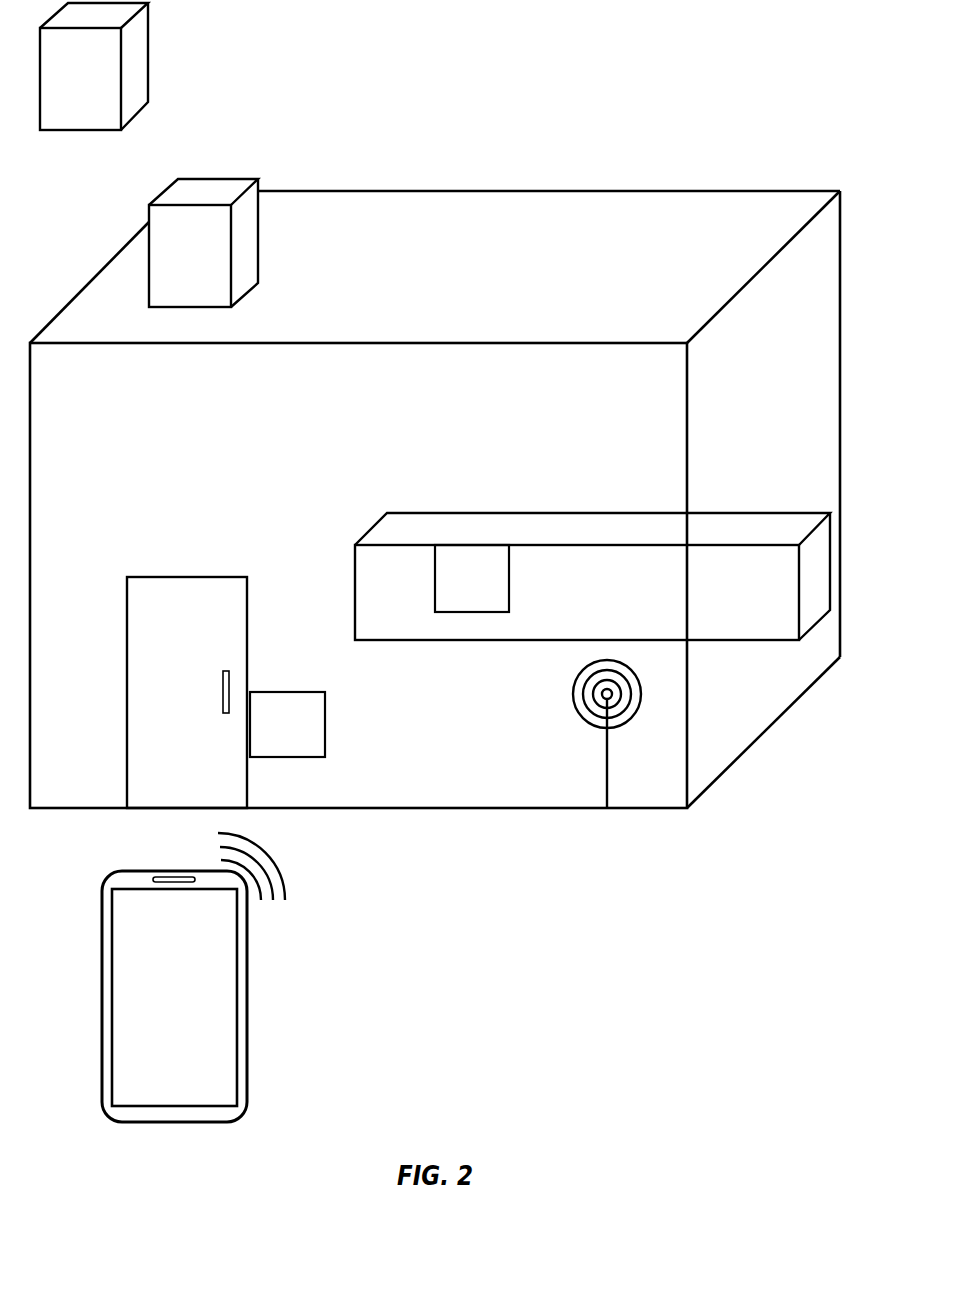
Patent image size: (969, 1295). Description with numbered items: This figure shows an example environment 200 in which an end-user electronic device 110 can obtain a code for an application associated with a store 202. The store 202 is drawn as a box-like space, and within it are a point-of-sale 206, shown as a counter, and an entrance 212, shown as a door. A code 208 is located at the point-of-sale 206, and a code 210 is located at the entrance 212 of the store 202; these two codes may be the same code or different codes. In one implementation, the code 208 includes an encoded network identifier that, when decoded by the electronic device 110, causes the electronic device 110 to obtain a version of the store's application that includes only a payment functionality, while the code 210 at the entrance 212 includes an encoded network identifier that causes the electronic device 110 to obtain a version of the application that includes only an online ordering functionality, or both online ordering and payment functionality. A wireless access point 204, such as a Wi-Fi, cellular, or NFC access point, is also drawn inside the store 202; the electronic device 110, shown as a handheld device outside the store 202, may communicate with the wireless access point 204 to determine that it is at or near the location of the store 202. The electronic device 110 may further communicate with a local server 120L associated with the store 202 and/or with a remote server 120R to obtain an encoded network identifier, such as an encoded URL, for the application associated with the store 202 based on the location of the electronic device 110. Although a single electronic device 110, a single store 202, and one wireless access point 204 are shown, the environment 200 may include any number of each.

The environment 200 is at (755, 94).
The store 202 is at (793, 190).
The wireless access point 204 is at (605, 772).
The point-of-sale 206 is at (607, 513).
The code 208 is at (509, 580).
The code 210 is at (325, 725).
The entrance 212 is at (186, 577).
The electronic device 110 is at (248, 998).
The remote server 120R is at (150, 55).
The local server 120L is at (258, 252).